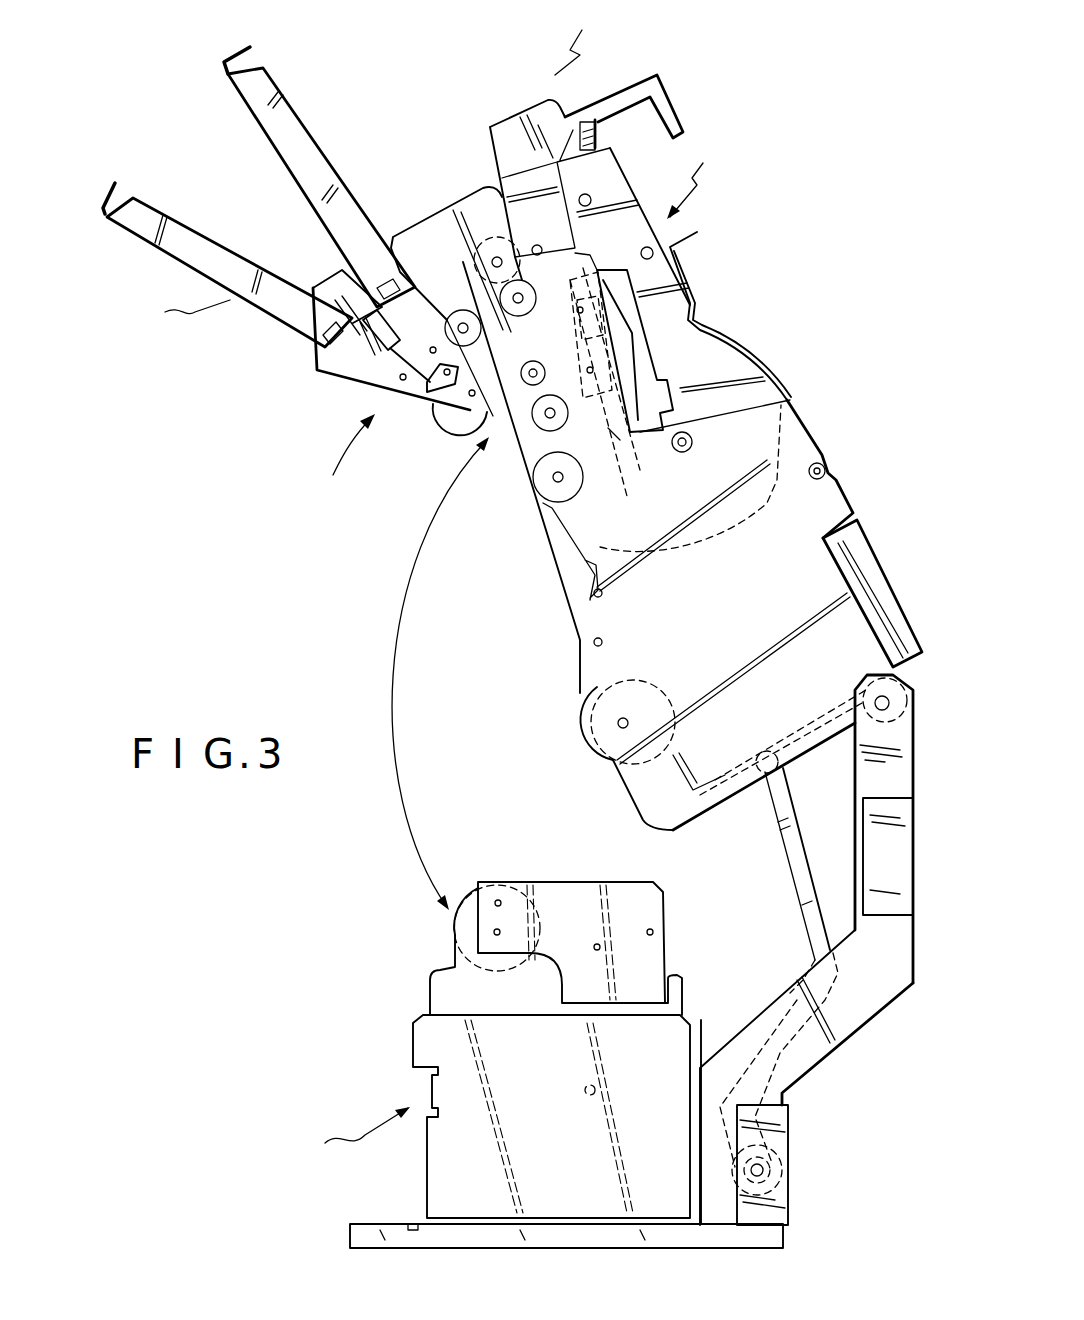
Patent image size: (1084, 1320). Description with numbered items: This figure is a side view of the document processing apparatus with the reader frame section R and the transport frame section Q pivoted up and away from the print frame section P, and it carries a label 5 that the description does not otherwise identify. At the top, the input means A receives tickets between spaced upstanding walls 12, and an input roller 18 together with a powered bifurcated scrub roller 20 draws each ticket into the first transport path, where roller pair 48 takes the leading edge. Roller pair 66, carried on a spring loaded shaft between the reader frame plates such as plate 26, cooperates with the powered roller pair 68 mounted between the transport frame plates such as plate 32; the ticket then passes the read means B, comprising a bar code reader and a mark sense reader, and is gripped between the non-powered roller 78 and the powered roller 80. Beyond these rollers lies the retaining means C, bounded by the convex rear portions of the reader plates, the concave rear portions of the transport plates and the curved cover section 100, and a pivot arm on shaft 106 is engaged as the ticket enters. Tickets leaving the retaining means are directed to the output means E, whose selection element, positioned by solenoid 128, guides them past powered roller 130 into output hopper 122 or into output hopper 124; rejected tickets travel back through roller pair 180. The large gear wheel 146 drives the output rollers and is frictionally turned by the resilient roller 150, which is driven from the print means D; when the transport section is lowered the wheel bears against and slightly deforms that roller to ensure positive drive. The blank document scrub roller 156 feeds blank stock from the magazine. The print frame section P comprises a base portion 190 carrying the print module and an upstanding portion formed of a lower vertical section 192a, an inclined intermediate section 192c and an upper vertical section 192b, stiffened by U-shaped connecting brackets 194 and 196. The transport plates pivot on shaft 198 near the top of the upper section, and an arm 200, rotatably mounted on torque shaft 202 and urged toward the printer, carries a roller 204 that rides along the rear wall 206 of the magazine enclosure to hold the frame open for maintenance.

The input means A is at (575, 38).
The upstanding walls 12 is at (617, 105).
The output hopper 122 is at (290, 118).
The output hopper 124 is at (195, 240).
The output means E is at (185, 310).
The solenoid 128 is at (378, 355).
The gear wheel 146 is at (462, 424).
The powered roller 130 is at (433, 348).
The roller pair 180 is at (469, 312).
The input roller 18 is at (538, 246).
The sheet guide 5 is at (496, 313).
The roller pair 68 is at (535, 430).
The roller 80 is at (534, 478).
The scrub roller 20 is at (455, 253).
The plate 32 is at (466, 205).
The plate 26 is at (617, 183).
The reader frame section R is at (697, 180).
The roller pair 48 is at (563, 277).
The curved cover section 100 is at (700, 285).
The transport frame section Q is at (845, 465).
The shaft 106 is at (692, 442).
The roller pair 66 is at (633, 380).
The read means B is at (613, 430).
The roller 78 is at (618, 390).
The retaining means C is at (773, 535).
The scrub roller 156 is at (590, 740).
The roller 204 is at (767, 750).
The rear wall 206 is at (789, 740).
The shaft 198 is at (892, 705).
The upper vertical section 192b is at (898, 765).
The U-shaped connecting bracket 196 is at (900, 855).
The inclined intermediate section 192c is at (862, 1007).
The arm 200 is at (793, 842).
The U-shaped connecting bracket 194 is at (770, 1133).
The torque shaft 202 is at (763, 1170).
The print means D is at (557, 857).
The roller 150 is at (457, 922).
The print frame section P is at (493, 1076).
The base portion 190 is at (583, 1228).
The lower vertical section 192a is at (715, 1236).